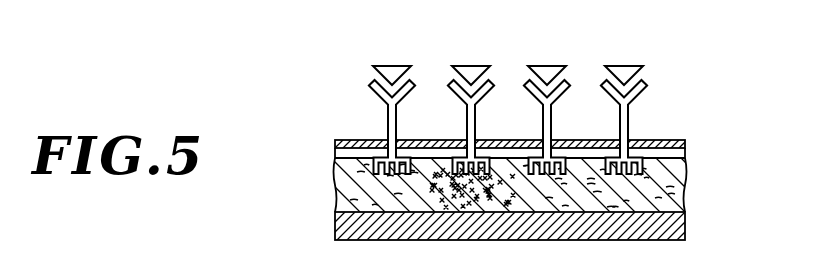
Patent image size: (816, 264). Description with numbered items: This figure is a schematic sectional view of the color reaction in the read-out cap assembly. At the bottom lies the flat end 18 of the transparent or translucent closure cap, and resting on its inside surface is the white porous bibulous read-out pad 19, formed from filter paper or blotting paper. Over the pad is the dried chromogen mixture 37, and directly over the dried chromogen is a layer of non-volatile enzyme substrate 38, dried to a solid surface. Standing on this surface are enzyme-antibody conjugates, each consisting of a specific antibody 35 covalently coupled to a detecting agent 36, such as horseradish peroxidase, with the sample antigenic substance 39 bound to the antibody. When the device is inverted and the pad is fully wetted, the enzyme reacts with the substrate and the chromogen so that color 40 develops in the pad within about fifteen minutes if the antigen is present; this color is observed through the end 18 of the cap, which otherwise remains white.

The end 18 is at (340, 232).
The read-out pad 19 is at (347, 187).
The specific antibody 35 is at (630, 107).
The detecting agent 36 is at (645, 163).
The chromogen mixture 37 is at (345, 157).
The enzyme substrate 38 is at (350, 140).
The antigenic substance 39 is at (621, 62).
The color 40 is at (497, 193).